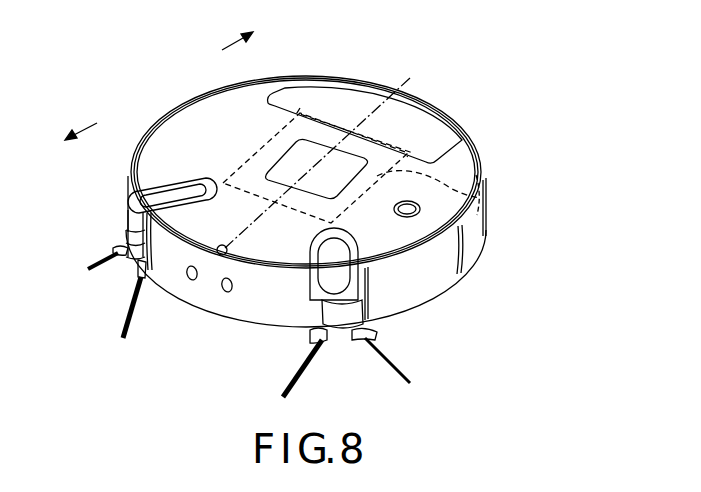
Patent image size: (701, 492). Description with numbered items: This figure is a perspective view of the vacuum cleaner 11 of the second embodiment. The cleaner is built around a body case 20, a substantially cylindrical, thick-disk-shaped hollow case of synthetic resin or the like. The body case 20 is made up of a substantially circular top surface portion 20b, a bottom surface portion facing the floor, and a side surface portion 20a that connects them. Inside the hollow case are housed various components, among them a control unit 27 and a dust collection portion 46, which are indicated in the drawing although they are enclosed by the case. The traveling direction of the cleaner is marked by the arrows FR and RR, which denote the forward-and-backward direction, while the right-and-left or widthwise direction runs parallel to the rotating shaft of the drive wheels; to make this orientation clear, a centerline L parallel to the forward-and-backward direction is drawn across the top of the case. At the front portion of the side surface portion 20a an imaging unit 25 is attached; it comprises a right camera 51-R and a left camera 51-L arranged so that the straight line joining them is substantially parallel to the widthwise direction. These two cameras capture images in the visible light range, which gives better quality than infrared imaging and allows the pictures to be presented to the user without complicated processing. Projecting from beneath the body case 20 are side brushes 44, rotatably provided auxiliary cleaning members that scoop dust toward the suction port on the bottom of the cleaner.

The vacuum cleaner 11 is at (364, 68).
The body case 20 is at (457, 162).
The side surface portion 20a is at (290, 313).
The top surface portion 20b is at (213, 110).
The imaging unit 25 is at (238, 278).
The control unit 27 is at (482, 197).
The side brushes 44 is at (123, 270).
The dust collection portion 46 is at (408, 118).
The right camera 51-R is at (190, 280).
The left camera 51-L is at (225, 294).
The centerline L is at (400, 77).
The rearward direction RR is at (232, 33).
The forward direction FR is at (78, 120).